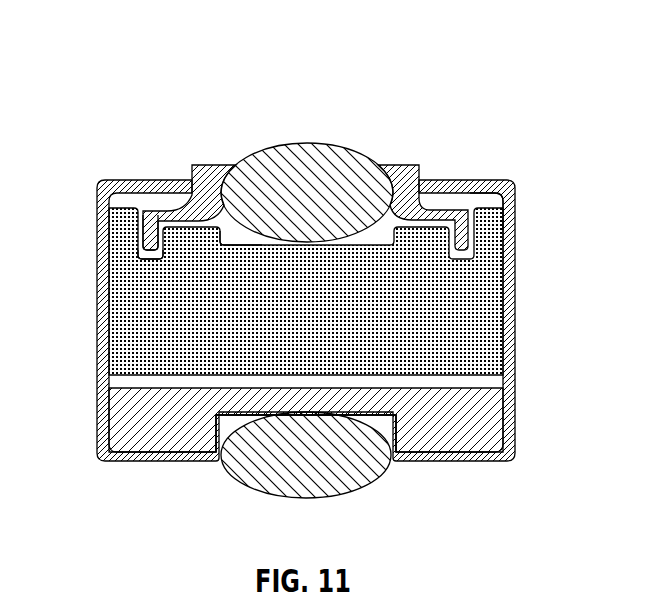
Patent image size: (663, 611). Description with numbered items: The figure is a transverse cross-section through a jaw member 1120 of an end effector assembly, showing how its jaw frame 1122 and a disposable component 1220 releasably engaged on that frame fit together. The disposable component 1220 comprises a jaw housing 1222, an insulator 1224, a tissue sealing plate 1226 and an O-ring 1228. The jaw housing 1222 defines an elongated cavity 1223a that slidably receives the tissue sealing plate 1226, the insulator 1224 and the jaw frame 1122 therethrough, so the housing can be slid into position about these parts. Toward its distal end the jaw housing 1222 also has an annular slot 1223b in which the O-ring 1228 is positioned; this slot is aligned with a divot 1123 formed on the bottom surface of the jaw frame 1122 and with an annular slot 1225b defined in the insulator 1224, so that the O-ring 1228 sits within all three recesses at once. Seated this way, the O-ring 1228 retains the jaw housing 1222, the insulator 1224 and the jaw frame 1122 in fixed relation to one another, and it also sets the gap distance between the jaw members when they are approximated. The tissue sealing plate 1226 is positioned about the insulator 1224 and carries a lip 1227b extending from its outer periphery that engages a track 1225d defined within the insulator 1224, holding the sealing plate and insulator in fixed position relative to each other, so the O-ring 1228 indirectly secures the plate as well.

The jaw member 1120 is at (461, 52).
The disposable component 1220 is at (522, 454).
The jaw housing 1222 is at (516, 259).
The elongated cavity 1223a is at (497, 196).
The annular slot 1223b is at (230, 433).
The insulator 1224 is at (482, 333).
The annular slot 1225b is at (228, 229).
The track 1225d is at (149, 269).
The tissue sealing plate 1226 is at (419, 166).
The lip 1227b is at (146, 252).
The O-ring 1228 is at (351, 177).
The jaw frame 1122 is at (498, 424).
The divot 1123 is at (380, 433).